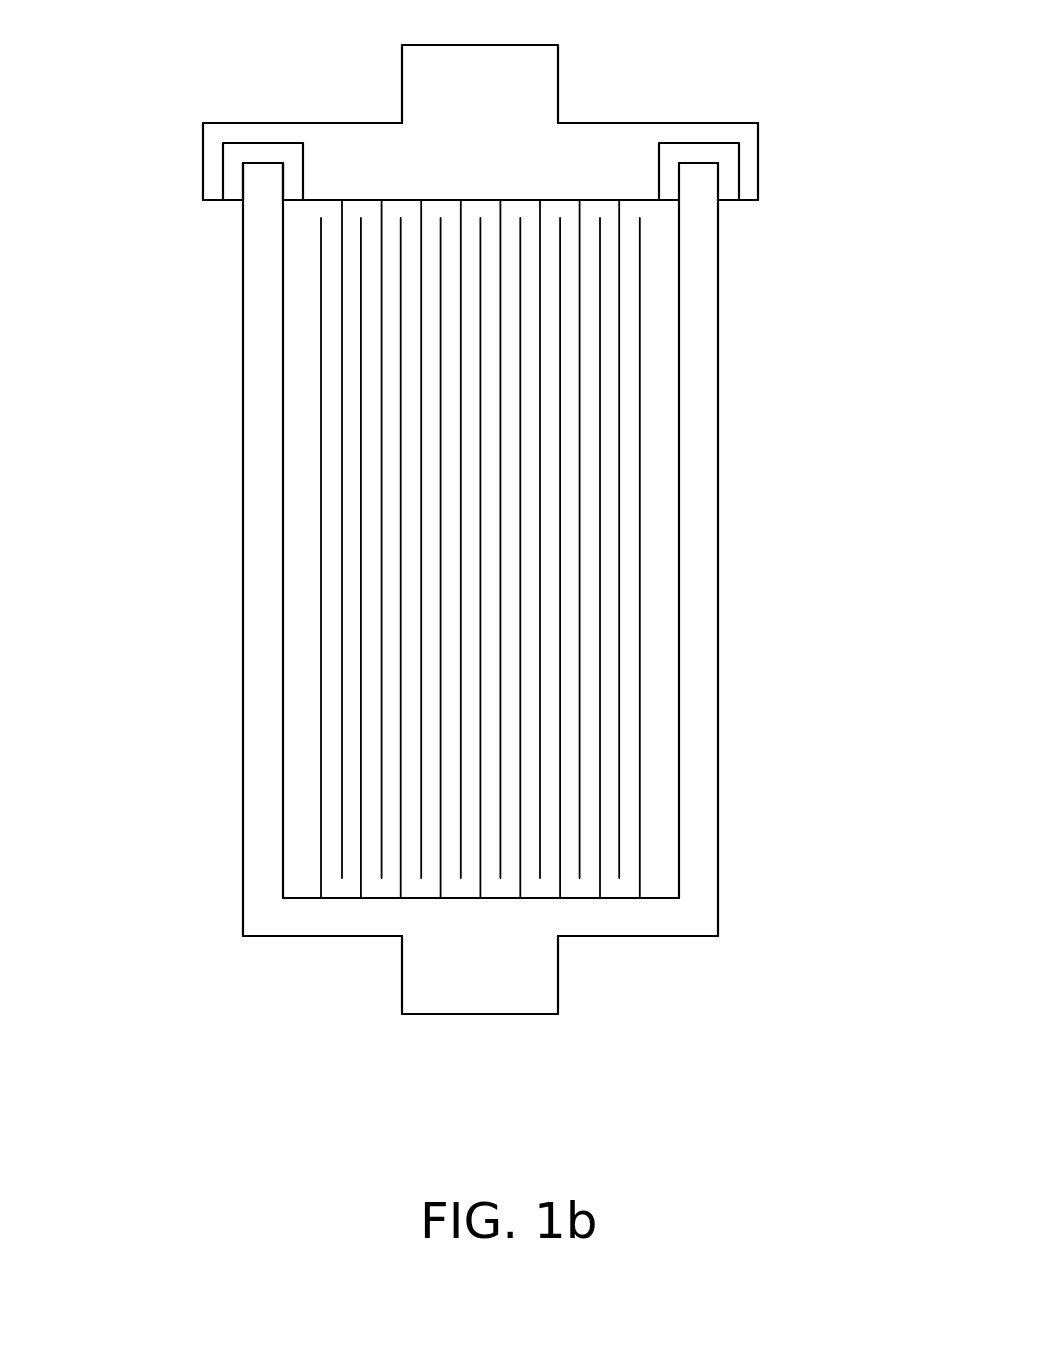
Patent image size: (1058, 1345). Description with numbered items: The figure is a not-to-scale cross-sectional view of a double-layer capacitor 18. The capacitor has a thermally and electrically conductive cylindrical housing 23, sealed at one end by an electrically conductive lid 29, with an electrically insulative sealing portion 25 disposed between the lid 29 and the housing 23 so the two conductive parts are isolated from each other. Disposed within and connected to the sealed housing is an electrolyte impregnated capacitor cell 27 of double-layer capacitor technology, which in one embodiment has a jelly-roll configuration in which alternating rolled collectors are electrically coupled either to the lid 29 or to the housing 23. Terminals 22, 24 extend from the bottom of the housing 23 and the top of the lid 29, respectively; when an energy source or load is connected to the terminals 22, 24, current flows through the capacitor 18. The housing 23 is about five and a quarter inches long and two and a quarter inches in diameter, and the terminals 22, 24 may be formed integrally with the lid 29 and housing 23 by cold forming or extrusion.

The double-layer capacitor 18 is at (70, 961).
The terminal 22 is at (440, 975).
The cylindrical housing 23 is at (718, 628).
The terminal 24 is at (480, 83).
The electrically insulative sealing portion 25 is at (233, 192).
The capacitor cell 27 is at (342, 705).
The lid 29 is at (758, 152).